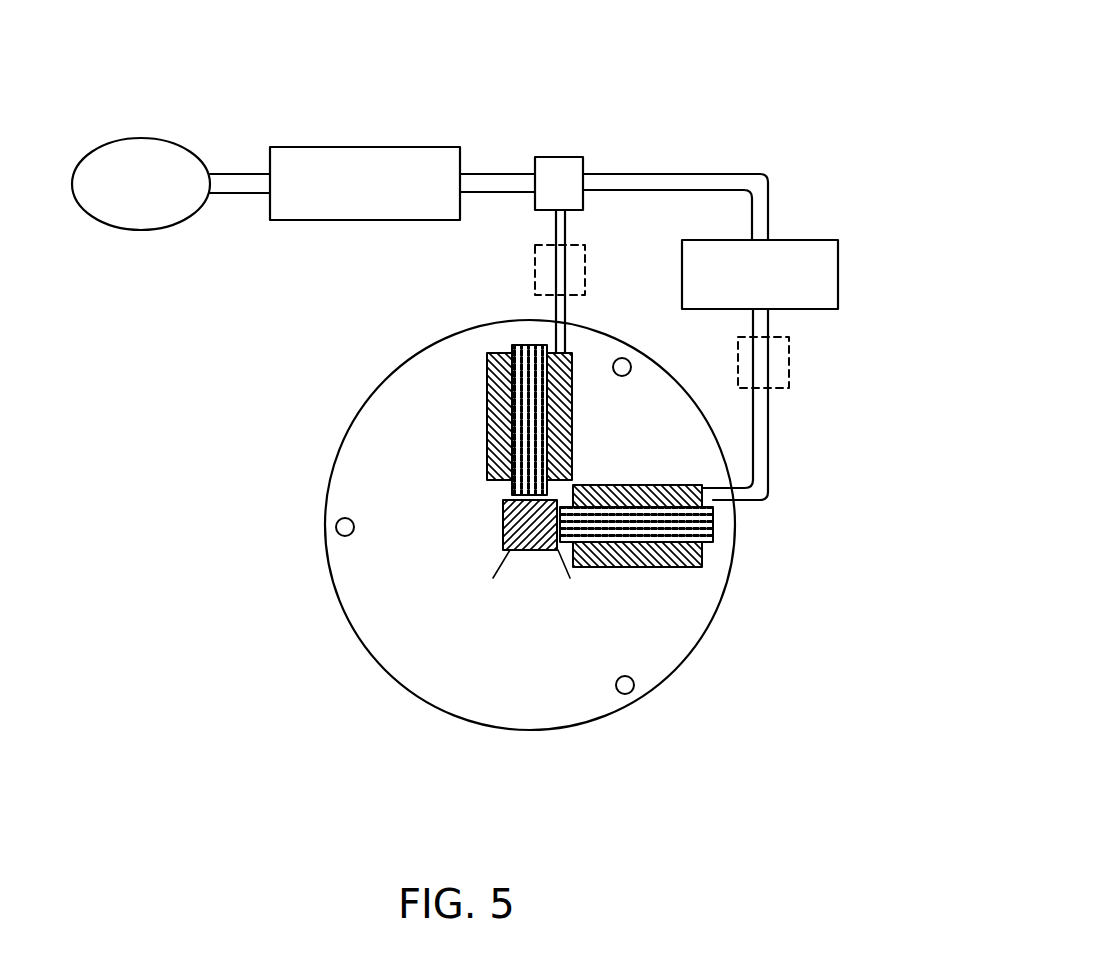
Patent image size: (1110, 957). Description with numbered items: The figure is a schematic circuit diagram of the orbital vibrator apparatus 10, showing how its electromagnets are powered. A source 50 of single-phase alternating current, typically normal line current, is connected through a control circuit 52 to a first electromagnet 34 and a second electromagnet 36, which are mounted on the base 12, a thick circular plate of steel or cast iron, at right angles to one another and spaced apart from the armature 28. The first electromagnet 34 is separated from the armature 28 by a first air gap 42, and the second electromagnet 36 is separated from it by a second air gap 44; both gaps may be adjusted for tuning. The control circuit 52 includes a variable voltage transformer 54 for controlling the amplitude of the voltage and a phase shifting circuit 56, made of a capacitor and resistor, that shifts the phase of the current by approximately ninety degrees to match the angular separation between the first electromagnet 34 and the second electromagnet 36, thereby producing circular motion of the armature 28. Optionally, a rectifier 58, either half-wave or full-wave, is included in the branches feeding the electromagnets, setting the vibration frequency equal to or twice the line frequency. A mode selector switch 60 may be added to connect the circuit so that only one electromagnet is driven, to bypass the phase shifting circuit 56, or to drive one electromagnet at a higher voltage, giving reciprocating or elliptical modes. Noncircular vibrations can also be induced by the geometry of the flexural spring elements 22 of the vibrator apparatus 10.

The orbital vibrator apparatus 10 is at (273, 712).
The base 12 is at (690, 638).
The flexural spring elements 22 is at (630, 358).
The armature 28 is at (508, 553).
The first electromagnet 34 is at (487, 395).
The second electromagnet 36 is at (705, 553).
The first air gap 42 is at (508, 500).
The second air gap 44 is at (558, 553).
The source of single-phase alternating current 50 is at (127, 145).
The control circuit 52 is at (697, 78).
The variable voltage transformer 54 is at (350, 150).
The phase shifting circuit 56 is at (815, 240).
The rectifier 58 is at (535, 263).
The mode selector switch 60 is at (577, 157).